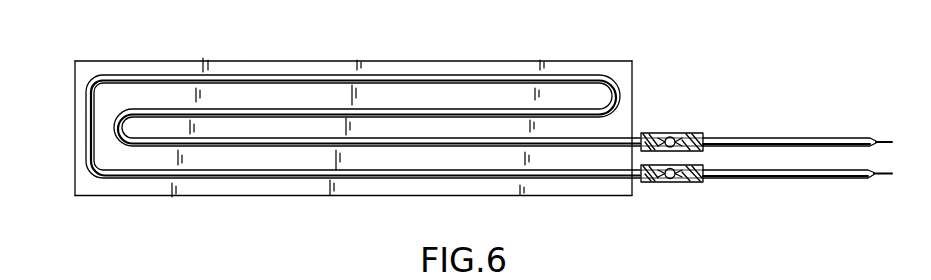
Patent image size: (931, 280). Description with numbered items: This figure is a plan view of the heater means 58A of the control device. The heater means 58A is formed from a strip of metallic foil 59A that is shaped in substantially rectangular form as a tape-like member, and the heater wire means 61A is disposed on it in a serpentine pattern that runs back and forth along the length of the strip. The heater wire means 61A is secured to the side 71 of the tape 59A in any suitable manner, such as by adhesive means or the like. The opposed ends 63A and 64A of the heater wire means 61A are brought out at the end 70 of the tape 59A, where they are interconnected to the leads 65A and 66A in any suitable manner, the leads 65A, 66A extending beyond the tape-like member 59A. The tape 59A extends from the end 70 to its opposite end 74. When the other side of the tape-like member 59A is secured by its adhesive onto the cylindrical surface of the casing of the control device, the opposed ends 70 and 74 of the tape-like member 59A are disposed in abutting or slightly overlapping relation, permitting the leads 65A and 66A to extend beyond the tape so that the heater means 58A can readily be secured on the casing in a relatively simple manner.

The heater means 58A is at (672, 68).
The strip of metallic foil 59A is at (440, 65).
The heater wire means 61A is at (306, 75).
The end of heater wire means 63A is at (632, 182).
The end of heater wire means 64A is at (633, 135).
The lead 65A is at (710, 178).
The lead 66A is at (713, 138).
The end of tape 70 is at (634, 69).
The side of tape 71 is at (168, 67).
The end of tape-like member 74 is at (74, 77).